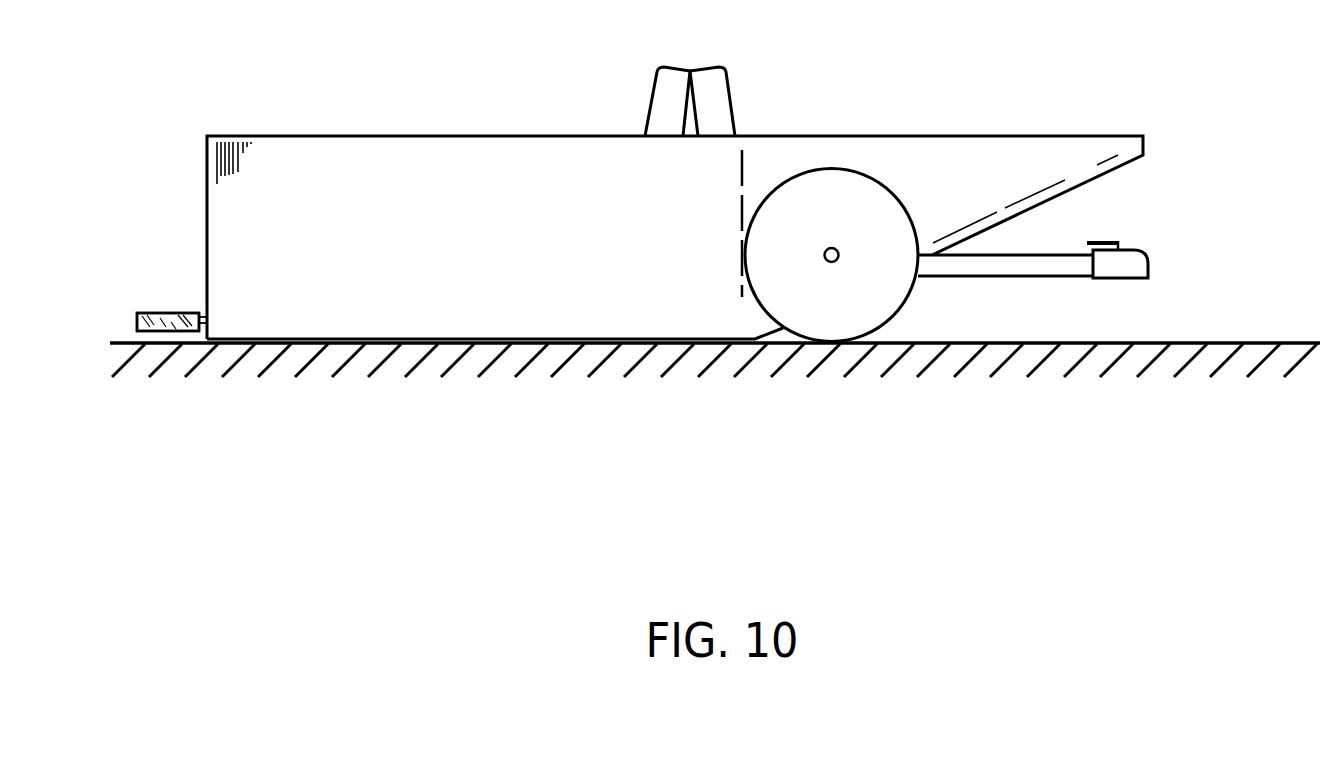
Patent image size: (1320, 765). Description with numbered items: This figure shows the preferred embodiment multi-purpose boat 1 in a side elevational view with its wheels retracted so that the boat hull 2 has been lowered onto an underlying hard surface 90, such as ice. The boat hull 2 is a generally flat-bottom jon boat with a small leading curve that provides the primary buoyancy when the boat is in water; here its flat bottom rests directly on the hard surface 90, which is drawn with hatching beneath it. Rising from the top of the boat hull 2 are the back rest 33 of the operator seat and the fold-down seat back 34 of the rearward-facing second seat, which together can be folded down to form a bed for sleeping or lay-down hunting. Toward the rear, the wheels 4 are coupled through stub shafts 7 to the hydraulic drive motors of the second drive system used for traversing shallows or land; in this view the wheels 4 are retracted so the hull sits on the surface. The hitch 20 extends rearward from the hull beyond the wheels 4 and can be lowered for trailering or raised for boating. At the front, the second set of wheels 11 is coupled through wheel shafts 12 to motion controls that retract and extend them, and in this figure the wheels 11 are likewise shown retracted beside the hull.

The multi-purpose boat 1 is at (479, 163).
The boat hull 2 is at (436, 260).
The wheels 4 is at (890, 300).
The stub shafts 7 is at (824, 262).
The second set of wheels 11 is at (137, 320).
The wheel shafts 12 is at (206, 316).
The hitch 20 is at (1044, 244).
The back rest 33 is at (720, 97).
The fold-down seat back 34 is at (660, 97).
The underlying hard surface 90 is at (1100, 345).